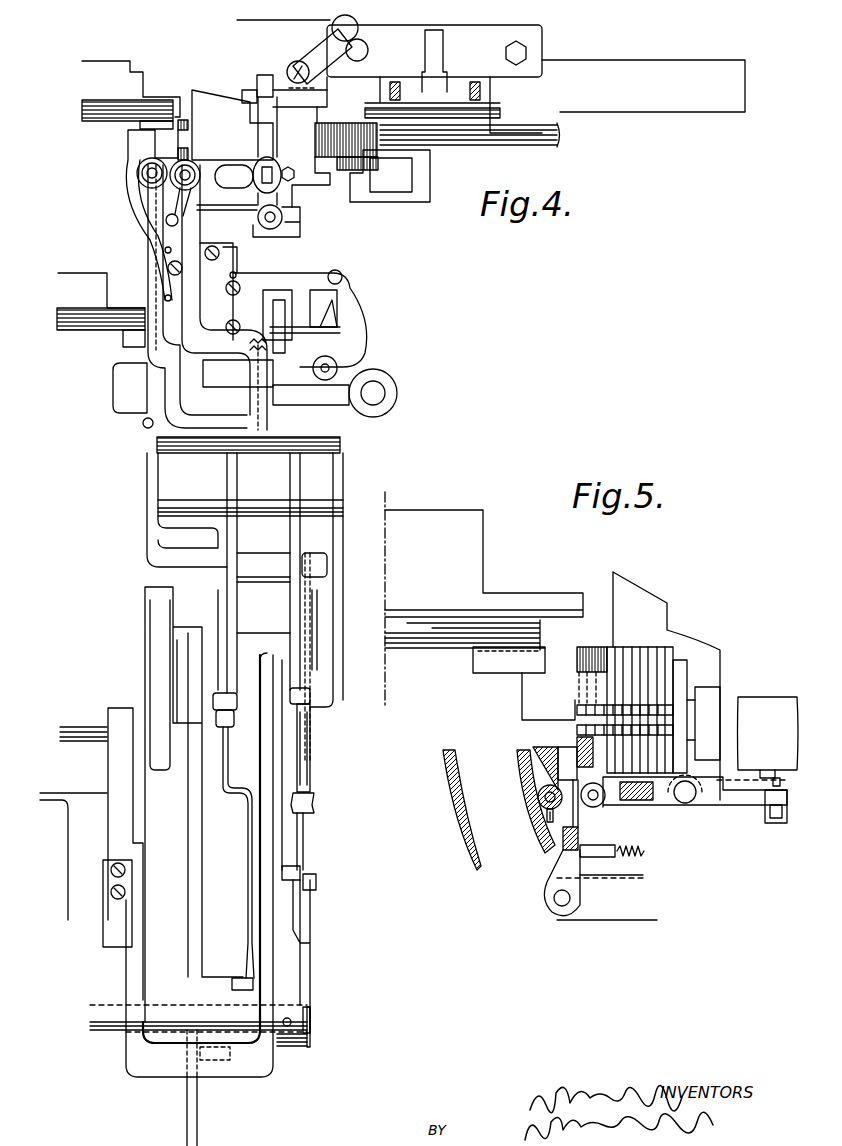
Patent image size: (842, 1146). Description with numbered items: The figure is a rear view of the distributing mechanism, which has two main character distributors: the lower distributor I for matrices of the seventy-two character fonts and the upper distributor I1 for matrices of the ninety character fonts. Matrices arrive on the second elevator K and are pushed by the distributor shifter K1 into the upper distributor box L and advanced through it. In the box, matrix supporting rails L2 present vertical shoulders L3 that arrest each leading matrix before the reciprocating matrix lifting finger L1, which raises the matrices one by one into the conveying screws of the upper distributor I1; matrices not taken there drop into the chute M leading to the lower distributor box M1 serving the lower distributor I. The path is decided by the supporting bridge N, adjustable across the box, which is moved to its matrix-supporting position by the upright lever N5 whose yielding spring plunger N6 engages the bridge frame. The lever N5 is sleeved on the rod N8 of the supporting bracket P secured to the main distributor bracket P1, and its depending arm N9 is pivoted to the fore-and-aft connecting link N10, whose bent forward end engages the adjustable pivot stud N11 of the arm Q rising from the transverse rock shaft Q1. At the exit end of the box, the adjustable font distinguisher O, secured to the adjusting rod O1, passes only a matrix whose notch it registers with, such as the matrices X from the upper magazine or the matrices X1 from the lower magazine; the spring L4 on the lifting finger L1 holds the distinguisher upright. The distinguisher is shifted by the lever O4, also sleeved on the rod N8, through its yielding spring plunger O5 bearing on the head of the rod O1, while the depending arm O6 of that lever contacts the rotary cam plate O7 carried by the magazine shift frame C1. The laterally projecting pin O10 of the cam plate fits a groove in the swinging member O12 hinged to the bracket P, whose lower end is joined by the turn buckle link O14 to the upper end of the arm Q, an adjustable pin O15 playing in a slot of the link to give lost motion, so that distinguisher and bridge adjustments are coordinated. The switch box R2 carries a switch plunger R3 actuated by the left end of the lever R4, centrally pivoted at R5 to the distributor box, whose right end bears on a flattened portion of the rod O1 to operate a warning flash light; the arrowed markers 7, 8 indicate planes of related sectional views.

In FIG. 4, the second elevator K is at (548, 132).
In FIG. 4, the distributor shifter K1 is at (421, 169).
In FIG. 5, the distributor shifter K1 is at (680, 687).
In FIG. 4, the upper distributor box L is at (227, 123).
In FIG. 5, the upper distributor box L is at (700, 660).
In FIG. 4, the matrix lifting finger L1 is at (170, 197).
In FIG. 5, the matrix lifting finger L1 is at (579, 837).
In FIG. 4, the matrix supporting rails L2 is at (182, 135).
In FIG. 5, the matrix supporting rails L2 is at (555, 718).
In FIG. 4, the vertical shoulders L3 is at (178, 131).
In FIG. 5, the vertical shoulders L3 is at (577, 662).
In FIG. 5, the spring L4 is at (644, 852).
In FIG. 4, the lower distributor I is at (88, 270).
In FIG. 4, the upper distributor I1 is at (127, 73).
In FIG. 5, the upper distributor I1 is at (518, 590).
In FIG. 5, the supporting bridge N is at (530, 748).
In FIG. 4, the upright lever N5 is at (157, 352).
In FIG. 4, the yielding spring plunger N6 is at (150, 173).
In FIG. 4, the rod N8 is at (343, 433).
In FIG. 4, the depending arm N9 is at (228, 568).
In FIG. 4, the connecting link N10 is at (225, 790).
In FIG. 4, the adjustable pivot stud N11 is at (230, 1027).
In FIG. 5, the font distinguisher O is at (537, 797).
In FIG. 5, the adjusting rod O1 is at (590, 807).
In FIG. 4, the lever O4 is at (190, 290).
In FIG. 4, the yielding spring plunger O5 is at (183, 182).
In FIG. 4, the depending arm O6 is at (293, 537).
In FIG. 4, the rotary cam plate O7 is at (312, 693).
In FIG. 4, the laterally projecting pin O10 is at (300, 873).
In FIG. 4, the swinging member O12 is at (311, 737).
In FIG. 4, the turn buckle link O14 is at (300, 833).
In FIG. 4, the adjustable pin O15 is at (316, 883).
In FIG. 4, the chute M is at (130, 216).
In FIG. 5, the chute M is at (448, 826).
In FIG. 4, the lower distributor box M1 is at (252, 285).
In FIG. 4, the supporting bracket P is at (149, 528).
In FIG. 4, the main distributor bracket P1 is at (155, 637).
In FIG. 4, the arm Q is at (300, 930).
In FIG. 4, the transverse rock shaft Q1 is at (312, 1017).
In FIG. 4, the magazine shift frame C1 is at (117, 830).
In FIG. 5, the switch box R2 is at (777, 703).
In FIG. 5, the switch plunger R3 is at (780, 786).
In FIG. 5, the lever R4 is at (747, 806).
In FIG. 5, the pivot R5 is at (690, 803).
In FIG. 5, the matrices X is at (587, 703).
In FIG. 5, the matrices X1 is at (600, 762).
In FIG. 5, the dimension reference 7 is at (508, 715).
In FIG. 5, the dimension reference 8 is at (505, 773).